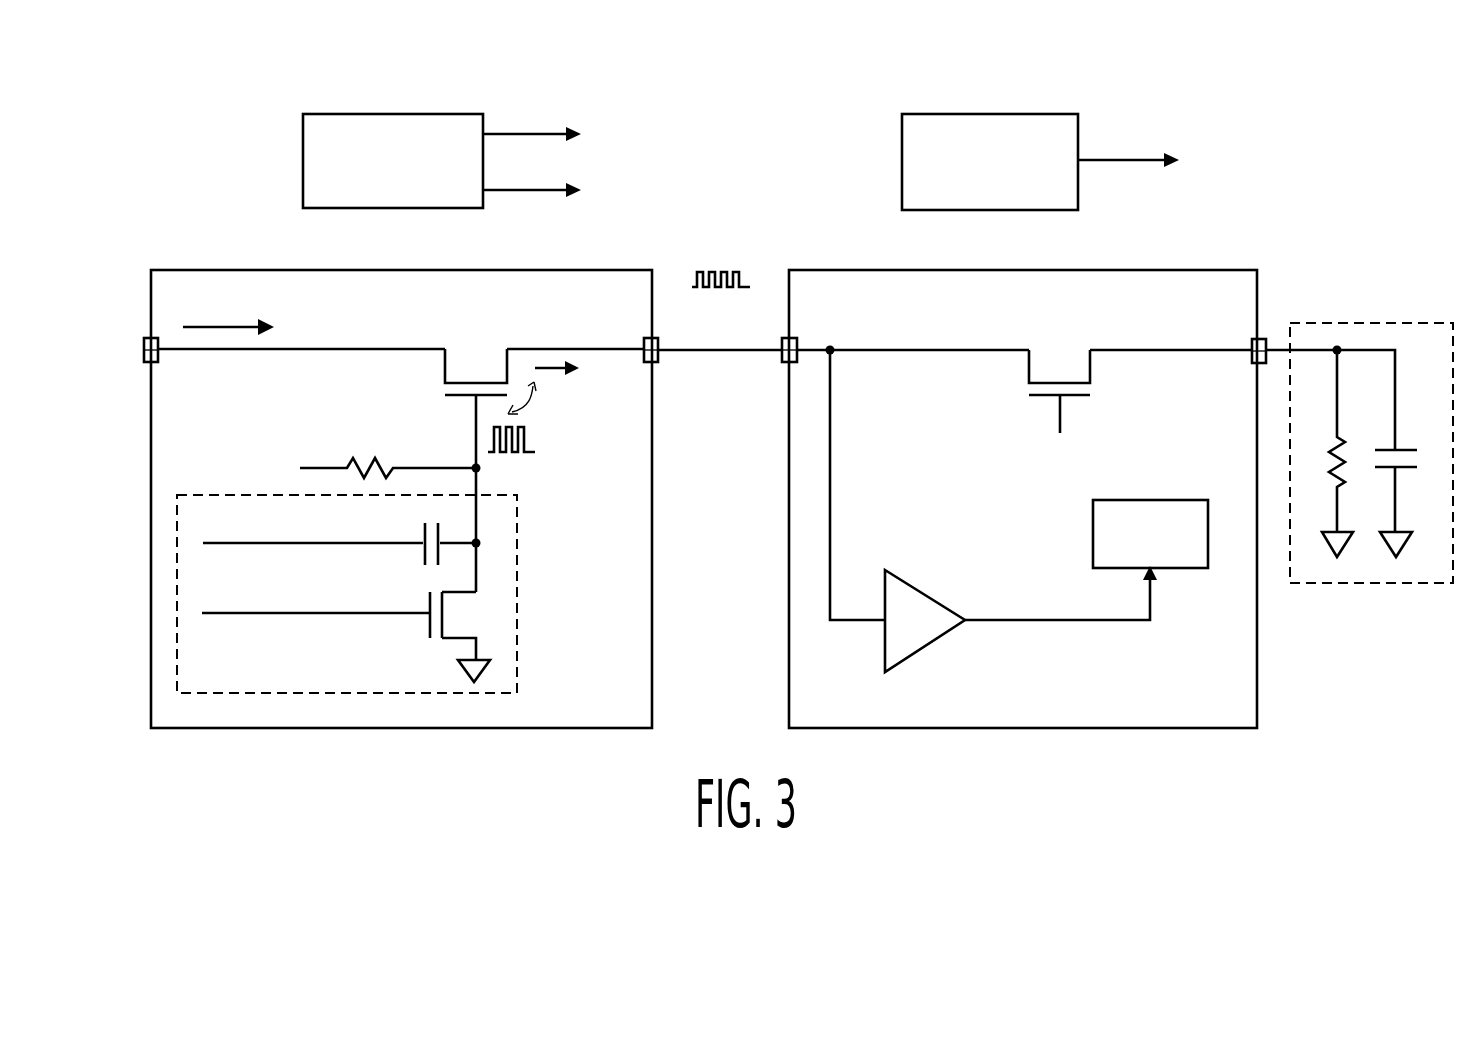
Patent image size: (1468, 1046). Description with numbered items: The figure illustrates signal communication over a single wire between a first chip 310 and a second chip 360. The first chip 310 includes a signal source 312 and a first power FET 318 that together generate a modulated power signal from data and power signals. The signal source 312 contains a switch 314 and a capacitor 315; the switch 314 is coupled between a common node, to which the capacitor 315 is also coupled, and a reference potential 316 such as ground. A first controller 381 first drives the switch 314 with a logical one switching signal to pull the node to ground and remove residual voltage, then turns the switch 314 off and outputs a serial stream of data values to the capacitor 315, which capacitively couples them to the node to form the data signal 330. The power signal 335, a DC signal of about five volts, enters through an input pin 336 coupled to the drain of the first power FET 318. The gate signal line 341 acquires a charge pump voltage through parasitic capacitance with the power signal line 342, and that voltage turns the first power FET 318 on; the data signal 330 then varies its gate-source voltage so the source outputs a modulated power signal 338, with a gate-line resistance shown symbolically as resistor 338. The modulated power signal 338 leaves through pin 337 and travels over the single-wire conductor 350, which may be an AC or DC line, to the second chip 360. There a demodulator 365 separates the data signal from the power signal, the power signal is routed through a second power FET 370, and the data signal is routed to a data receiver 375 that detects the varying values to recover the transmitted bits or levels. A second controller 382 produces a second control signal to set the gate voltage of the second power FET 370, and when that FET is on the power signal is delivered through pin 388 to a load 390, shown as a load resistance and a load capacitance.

The first chip 310 is at (652, 270).
The signal source 312 is at (519, 588).
The switch 314 is at (427, 600).
The capacitor 315 is at (422, 533).
The reference potential 316 is at (483, 674).
The first power FET 318 is at (445, 366).
The data signal 330 is at (476, 516).
The power signal 335 is at (320, 349).
The input pin 336 is at (147, 340).
The pin of the first chip 337 is at (660, 353).
The modulated power signal 338 is at (560, 349).
The gate signal line 341 is at (474, 403).
The power signal line 342 is at (216, 353).
The single-wire conductor 350 is at (706, 352).
The second chip 360 is at (1228, 270).
The demodulator 365 is at (1182, 570).
The second power FET 370 is at (1092, 377).
The data receiver 375 is at (920, 648).
The first controller 381 is at (302, 142).
The second controller 382 is at (902, 132).
The pin of the second chip 388 is at (1266, 341).
The load 390 is at (1417, 323).